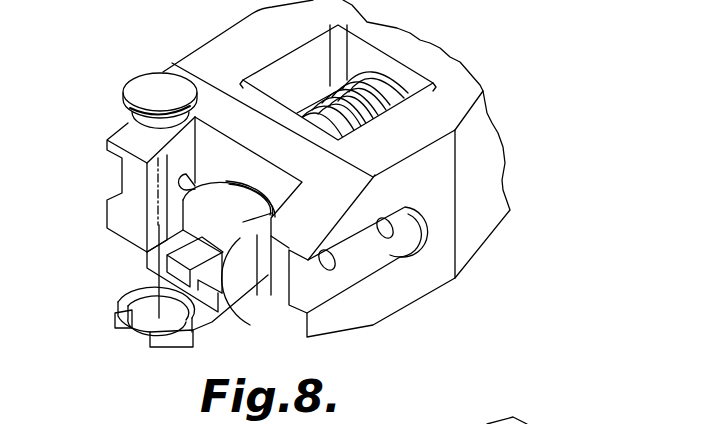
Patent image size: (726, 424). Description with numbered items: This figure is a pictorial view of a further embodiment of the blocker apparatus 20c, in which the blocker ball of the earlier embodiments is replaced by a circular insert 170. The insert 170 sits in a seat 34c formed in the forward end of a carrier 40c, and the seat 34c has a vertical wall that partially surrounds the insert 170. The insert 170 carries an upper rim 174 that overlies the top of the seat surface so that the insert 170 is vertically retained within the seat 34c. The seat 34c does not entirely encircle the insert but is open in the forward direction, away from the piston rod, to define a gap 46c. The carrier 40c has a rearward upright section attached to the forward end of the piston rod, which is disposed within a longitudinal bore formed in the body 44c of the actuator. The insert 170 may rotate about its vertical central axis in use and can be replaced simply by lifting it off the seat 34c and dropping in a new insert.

The blocker apparatus 20c is at (140, 52).
The upper rim 174 is at (125, 82).
The circular insert 170 is at (128, 108).
The seat 34c is at (122, 298).
The gap 46c is at (138, 333).
The carrier 40c is at (222, 278).
The body 44c is at (482, 255).